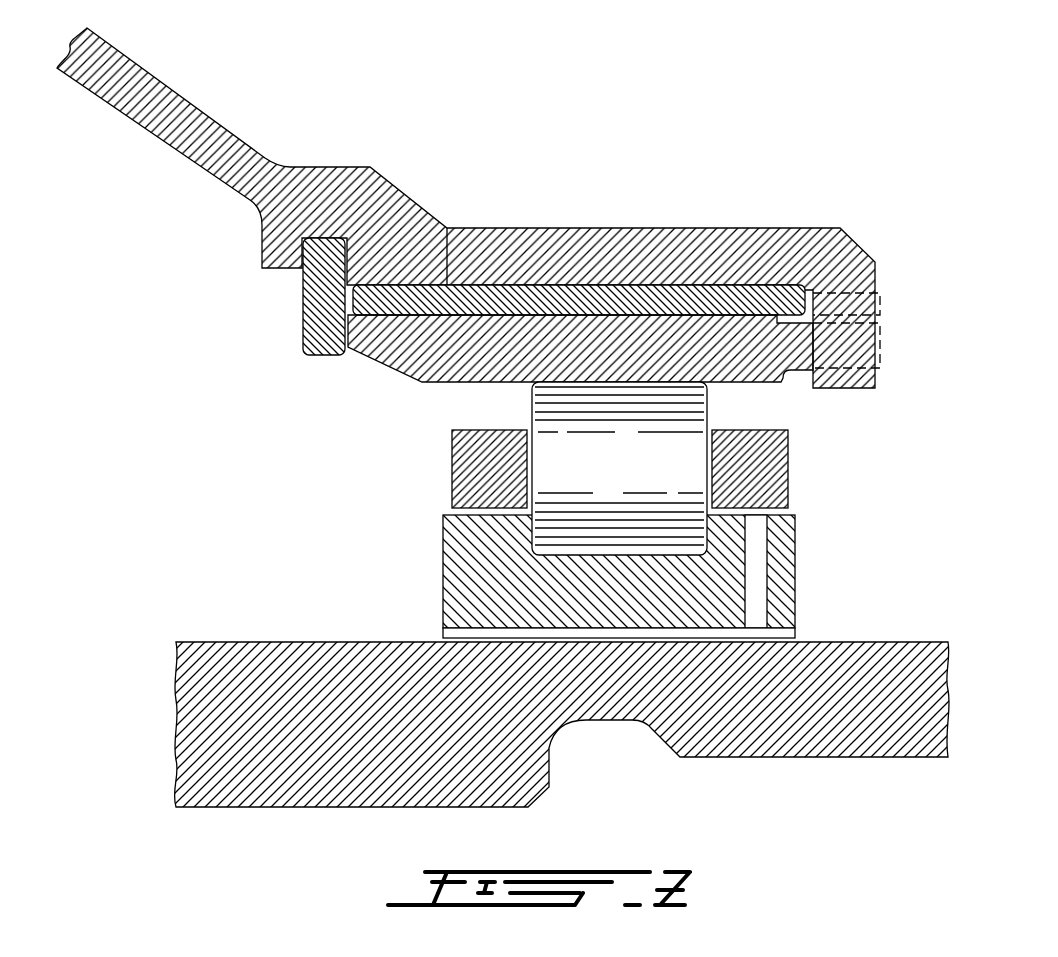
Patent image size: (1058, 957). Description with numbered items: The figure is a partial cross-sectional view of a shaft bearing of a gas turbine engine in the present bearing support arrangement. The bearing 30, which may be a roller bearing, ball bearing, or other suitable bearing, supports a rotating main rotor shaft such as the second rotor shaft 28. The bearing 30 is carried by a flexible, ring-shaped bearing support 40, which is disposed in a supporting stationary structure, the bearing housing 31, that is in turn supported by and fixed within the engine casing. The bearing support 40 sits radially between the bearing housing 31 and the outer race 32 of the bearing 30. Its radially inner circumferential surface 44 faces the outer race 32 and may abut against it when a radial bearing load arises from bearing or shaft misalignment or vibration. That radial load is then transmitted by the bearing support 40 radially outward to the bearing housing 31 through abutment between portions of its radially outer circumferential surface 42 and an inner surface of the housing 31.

The second rotor shaft 28 is at (866, 665).
The bearing 30 is at (420, 560).
The bearing housing 31 is at (640, 228).
The outer race 32 is at (410, 375).
The bearing support 40 is at (729, 295).
The radially outer circumferential surface 42 is at (447, 228).
The radially inner circumferential surface 44 is at (360, 356).